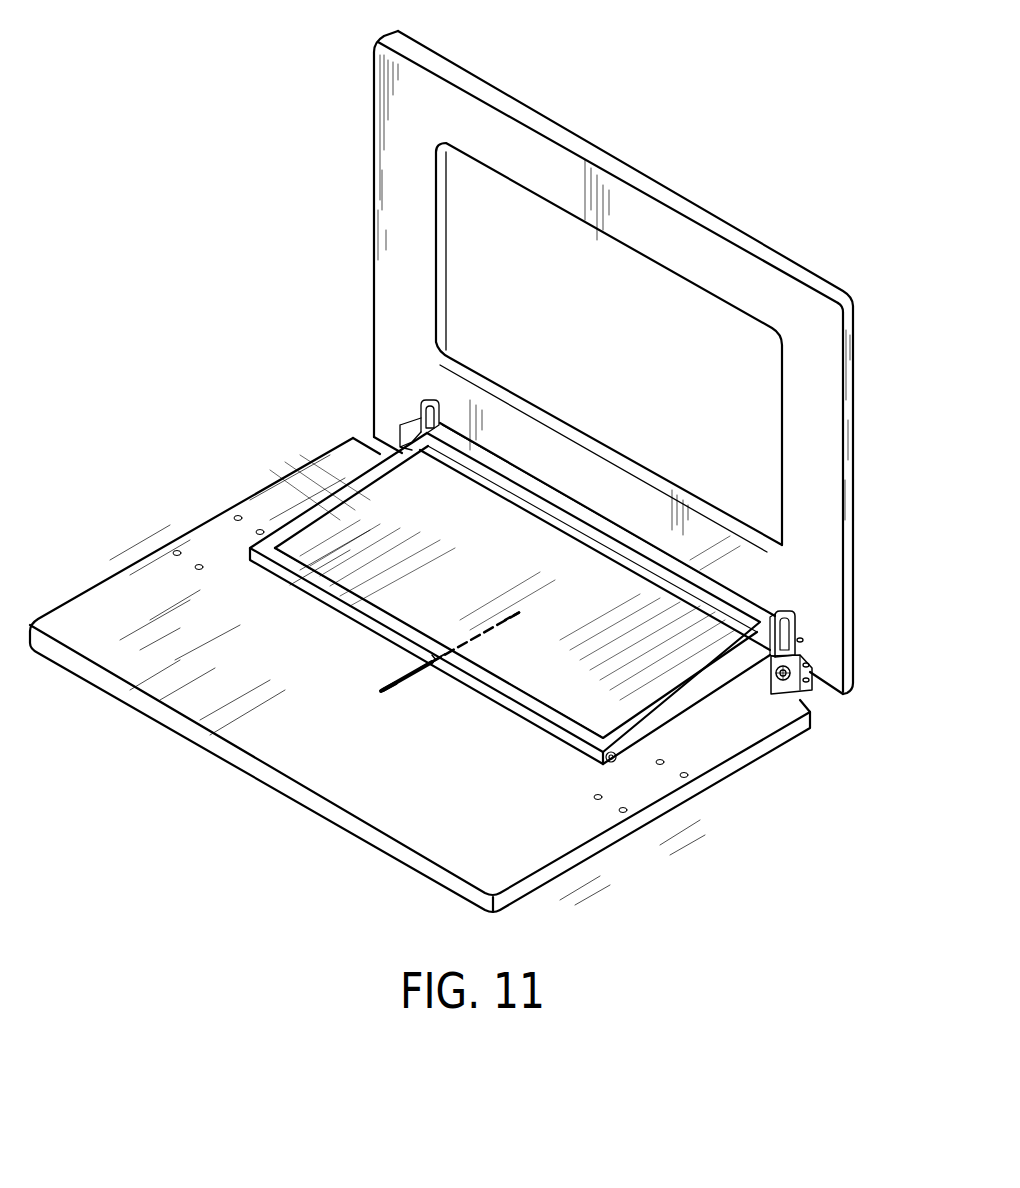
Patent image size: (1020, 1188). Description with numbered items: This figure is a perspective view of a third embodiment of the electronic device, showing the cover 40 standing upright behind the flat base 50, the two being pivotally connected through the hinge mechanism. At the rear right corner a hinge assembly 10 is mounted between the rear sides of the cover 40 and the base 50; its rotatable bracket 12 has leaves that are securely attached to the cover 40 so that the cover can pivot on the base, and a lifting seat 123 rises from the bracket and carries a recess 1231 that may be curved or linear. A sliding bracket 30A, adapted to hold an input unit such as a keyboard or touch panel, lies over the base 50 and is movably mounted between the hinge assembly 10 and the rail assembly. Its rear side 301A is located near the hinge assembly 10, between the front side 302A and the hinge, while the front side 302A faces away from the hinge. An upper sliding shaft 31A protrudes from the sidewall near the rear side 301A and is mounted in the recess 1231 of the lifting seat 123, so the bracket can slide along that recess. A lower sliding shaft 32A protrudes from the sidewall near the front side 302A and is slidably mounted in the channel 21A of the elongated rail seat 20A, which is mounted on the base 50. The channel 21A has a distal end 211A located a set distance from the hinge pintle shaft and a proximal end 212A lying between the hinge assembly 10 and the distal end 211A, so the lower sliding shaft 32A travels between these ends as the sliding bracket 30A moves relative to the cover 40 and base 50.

The hinge assembly 10 is at (807, 635).
The rotatable bracket 12 is at (808, 666).
The lifting seat 123 is at (841, 596).
The recess 1231 is at (787, 636).
The rail seat 20A is at (445, 688).
The channel 21A is at (395, 680).
The distal end 211A is at (385, 690).
The proximal end 212A is at (496, 612).
The sliding bracket 30A is at (669, 710).
The rear side 301A is at (705, 592).
The front side 302A is at (508, 690).
The upper sliding shaft 31A is at (772, 682).
The lower sliding shaft 32A is at (432, 662).
The cover 40 is at (687, 172).
The base 50 is at (302, 826).